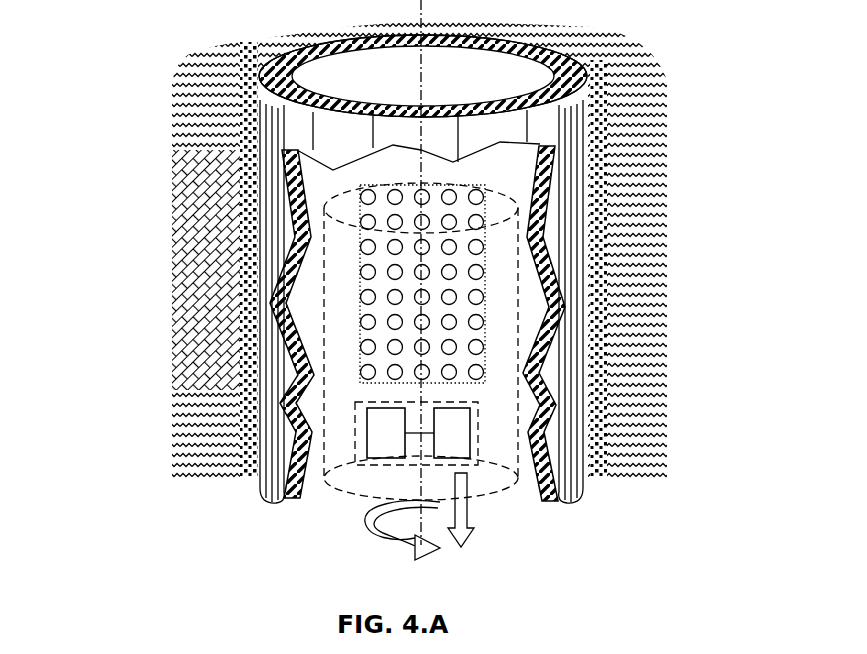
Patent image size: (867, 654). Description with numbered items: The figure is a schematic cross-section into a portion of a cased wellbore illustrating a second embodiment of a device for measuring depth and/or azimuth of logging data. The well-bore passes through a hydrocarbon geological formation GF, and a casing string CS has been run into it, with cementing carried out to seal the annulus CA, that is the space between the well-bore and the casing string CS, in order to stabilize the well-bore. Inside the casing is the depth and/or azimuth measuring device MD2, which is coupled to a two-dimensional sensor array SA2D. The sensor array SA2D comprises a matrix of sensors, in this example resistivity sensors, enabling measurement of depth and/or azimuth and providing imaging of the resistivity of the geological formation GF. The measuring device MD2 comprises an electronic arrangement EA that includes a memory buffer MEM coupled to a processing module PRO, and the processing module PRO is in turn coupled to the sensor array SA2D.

The annulus CA is at (244, 58).
The geological formation GF is at (183, 90).
The casing string CS is at (268, 138).
The 2D sensor array SA2D is at (355, 315).
The depth and/or azimuth measuring device MD2 is at (400, 432).
The memory buffer MEM is at (383, 445).
The processing module PRO is at (462, 443).
The electronic arrangement EA is at (463, 478).